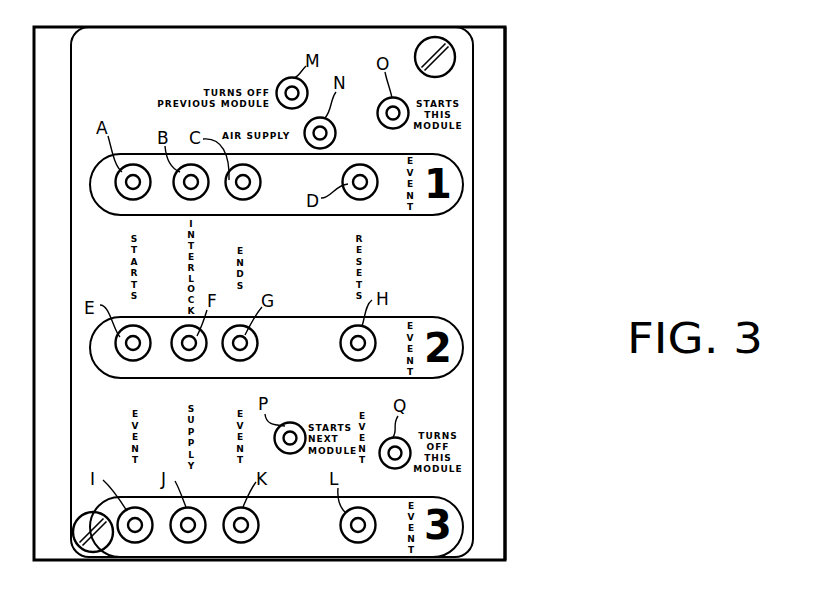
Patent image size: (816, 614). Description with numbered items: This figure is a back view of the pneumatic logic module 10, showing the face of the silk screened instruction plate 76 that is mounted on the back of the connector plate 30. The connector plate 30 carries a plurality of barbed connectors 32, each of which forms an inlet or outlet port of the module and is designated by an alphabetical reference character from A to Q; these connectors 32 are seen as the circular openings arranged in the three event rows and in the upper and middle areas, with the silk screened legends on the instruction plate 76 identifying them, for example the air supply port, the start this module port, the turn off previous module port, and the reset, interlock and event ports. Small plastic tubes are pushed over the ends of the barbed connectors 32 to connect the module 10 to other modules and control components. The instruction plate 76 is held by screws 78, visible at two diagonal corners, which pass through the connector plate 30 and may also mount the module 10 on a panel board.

The pneumatic logic module 10 is at (505, 115).
The connector plate 30 is at (493, 520).
The barbed connectors 32 is at (336, 140).
The instruction plate 76 is at (473, 457).
The screws 78 is at (451, 67).